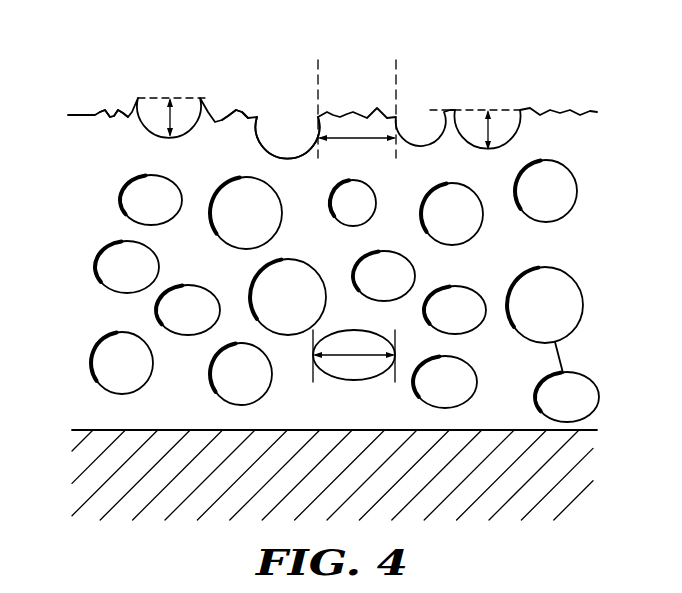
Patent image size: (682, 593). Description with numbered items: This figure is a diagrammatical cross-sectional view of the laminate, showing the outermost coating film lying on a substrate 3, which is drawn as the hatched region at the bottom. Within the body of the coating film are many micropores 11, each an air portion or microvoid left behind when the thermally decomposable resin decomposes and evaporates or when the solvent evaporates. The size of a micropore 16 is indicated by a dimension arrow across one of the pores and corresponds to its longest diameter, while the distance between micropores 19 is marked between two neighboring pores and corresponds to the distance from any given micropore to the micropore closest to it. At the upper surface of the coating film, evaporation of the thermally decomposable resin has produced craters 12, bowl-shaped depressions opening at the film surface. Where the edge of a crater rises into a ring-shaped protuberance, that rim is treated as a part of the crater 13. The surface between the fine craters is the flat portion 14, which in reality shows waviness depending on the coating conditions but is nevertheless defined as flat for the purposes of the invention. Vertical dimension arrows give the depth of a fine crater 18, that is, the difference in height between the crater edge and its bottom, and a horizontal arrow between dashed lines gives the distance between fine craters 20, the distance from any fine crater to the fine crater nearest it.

The substrate 3 is at (583, 470).
The micropore 11 is at (124, 199).
The crater 12 is at (302, 118).
The part of the crater 13 is at (127, 87).
The flat portion 14 is at (110, 110).
The size of a micropore 16 is at (365, 358).
The depth of a fine crater 18 is at (177, 118).
The distance between micropores 19 is at (560, 356).
The distance between fine craters 20 is at (378, 138).